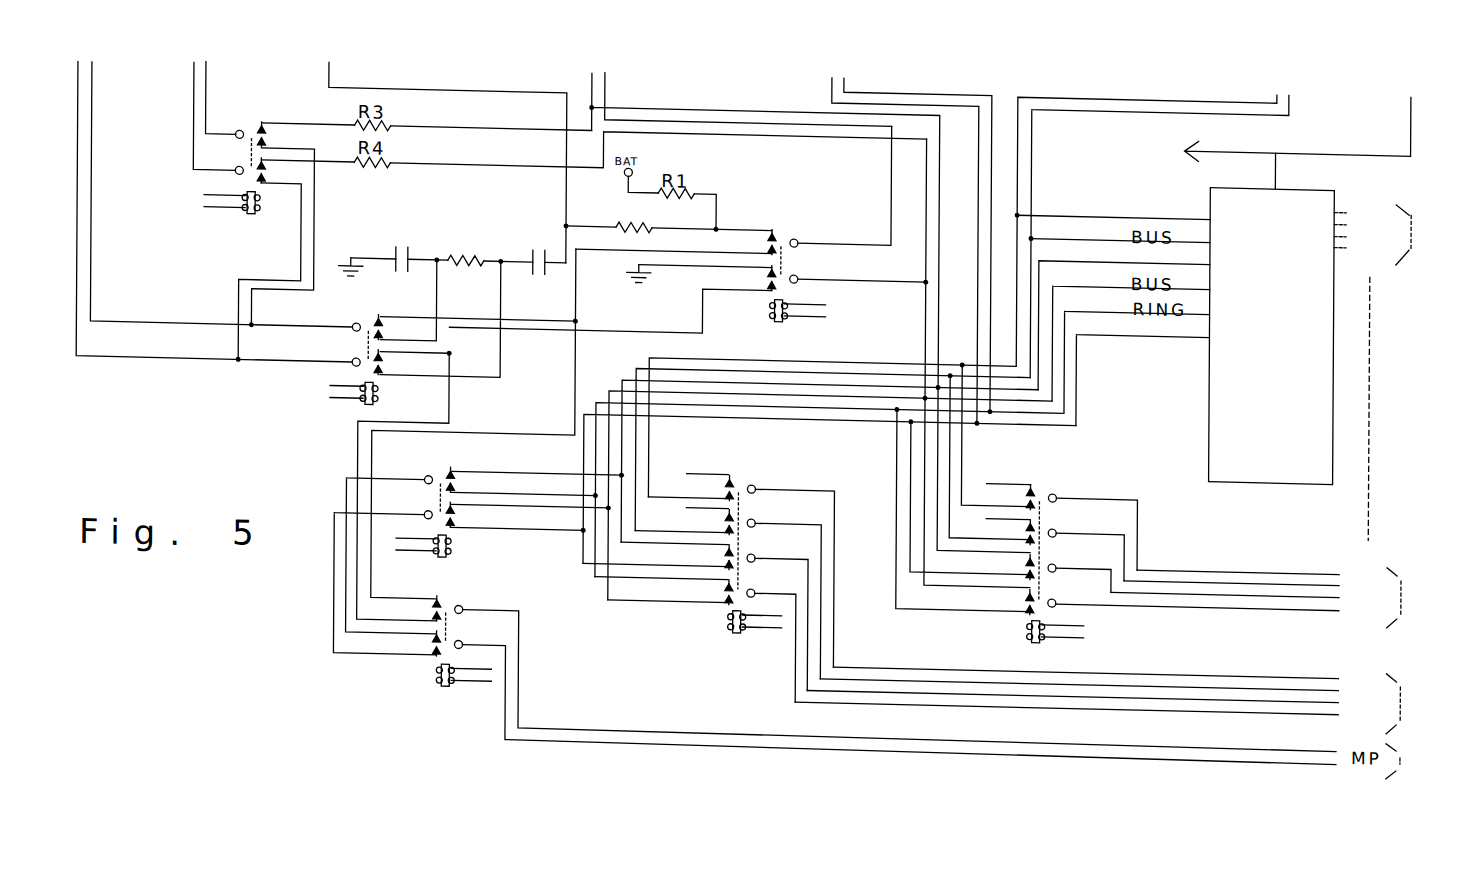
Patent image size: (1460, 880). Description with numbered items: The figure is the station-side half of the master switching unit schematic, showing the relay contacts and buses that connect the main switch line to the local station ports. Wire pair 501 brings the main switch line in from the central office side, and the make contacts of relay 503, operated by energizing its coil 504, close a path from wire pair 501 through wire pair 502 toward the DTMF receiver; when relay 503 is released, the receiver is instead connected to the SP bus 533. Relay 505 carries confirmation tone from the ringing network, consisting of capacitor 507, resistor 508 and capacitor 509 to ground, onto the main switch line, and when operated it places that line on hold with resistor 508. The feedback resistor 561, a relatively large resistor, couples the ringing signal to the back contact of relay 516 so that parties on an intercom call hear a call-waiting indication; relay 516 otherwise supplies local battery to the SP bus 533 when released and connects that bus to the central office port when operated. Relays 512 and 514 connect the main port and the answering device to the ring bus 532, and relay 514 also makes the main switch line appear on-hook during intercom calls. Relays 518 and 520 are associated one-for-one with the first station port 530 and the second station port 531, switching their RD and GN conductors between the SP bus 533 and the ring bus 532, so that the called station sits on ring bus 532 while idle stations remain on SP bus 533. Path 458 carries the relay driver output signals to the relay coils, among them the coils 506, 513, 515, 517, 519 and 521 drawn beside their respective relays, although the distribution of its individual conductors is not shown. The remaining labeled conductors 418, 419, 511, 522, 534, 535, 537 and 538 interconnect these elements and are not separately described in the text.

The status line 418 is at (827, 97).
The bus line 419 is at (858, 95).
The path 458 is at (1407, 112).
The wire pair 501 is at (93, 110).
The wire pair 502 is at (208, 107).
The K2 relay 503 is at (280, 133).
The coil 504 is at (236, 231).
The K3 relay 505 is at (357, 348).
The relay K3 coil 506 is at (386, 409).
The C1 capacitor 507 is at (411, 240).
The R2 resistor 508 is at (474, 239).
The C2 capacitor 509 is at (536, 240).
The connection line 511 is at (353, 441).
The K4 relay 512 is at (474, 474).
The relay K4 coil 513 is at (461, 549).
The K8 relay 514 is at (473, 611).
The relay K8 coil 515 is at (428, 674).
The K5 relay 516 is at (816, 241).
The relay K5 coil 517 is at (838, 305).
The K6 relay 518 is at (775, 483).
The relay K6 coil 519 is at (718, 617).
The K7 relay 520 is at (1064, 485).
The relay K7 coil 521 is at (1018, 620).
The bus lines 522 is at (652, 463).
The station port 530 is at (1350, 652).
The station port 531 is at (1350, 547).
The ring bus 532 is at (1102, 332).
The SP bus 533 is at (1103, 254).
The status line 534 is at (1103, 207).
The status/bus lines 535 is at (1034, 150).
The line 537 is at (589, 98).
The line 538 is at (606, 97).
The RFB resistor 561 is at (611, 214).